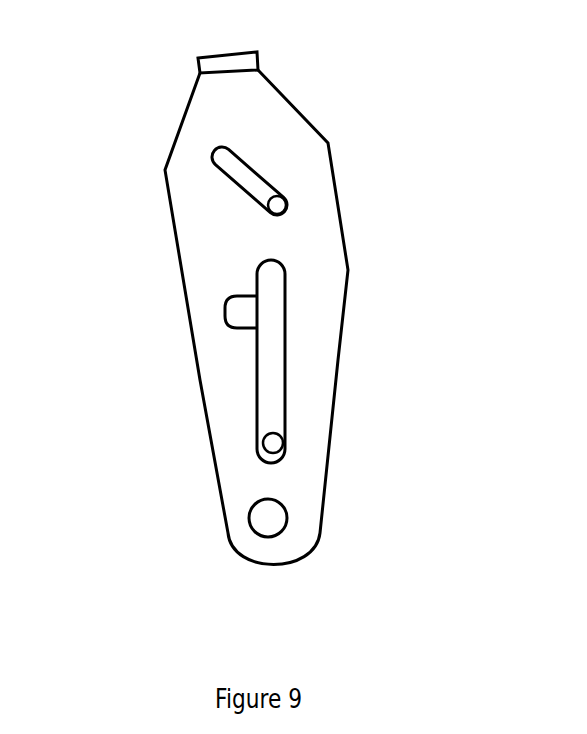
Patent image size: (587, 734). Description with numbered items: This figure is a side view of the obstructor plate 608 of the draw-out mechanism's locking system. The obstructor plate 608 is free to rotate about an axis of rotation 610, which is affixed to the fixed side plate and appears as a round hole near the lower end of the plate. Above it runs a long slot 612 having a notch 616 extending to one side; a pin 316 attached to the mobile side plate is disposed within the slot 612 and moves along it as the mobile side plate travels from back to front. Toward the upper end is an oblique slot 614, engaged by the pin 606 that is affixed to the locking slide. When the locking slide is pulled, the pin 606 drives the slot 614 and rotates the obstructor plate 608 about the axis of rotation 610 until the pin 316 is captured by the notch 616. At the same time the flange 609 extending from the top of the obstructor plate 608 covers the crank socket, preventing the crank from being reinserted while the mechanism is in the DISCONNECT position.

The obstructor plate 608 is at (335, 377).
The flange 609 is at (245, 45).
The slot 614 is at (250, 163).
The pin 606 is at (260, 197).
The slot 612 is at (287, 313).
The notch 616 is at (260, 328).
The pin 316 is at (280, 442).
The axis of rotation 610 is at (288, 520).